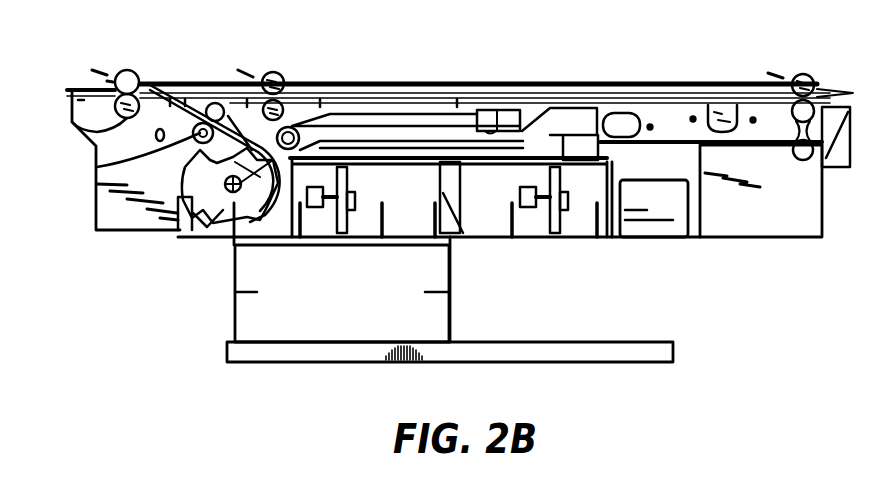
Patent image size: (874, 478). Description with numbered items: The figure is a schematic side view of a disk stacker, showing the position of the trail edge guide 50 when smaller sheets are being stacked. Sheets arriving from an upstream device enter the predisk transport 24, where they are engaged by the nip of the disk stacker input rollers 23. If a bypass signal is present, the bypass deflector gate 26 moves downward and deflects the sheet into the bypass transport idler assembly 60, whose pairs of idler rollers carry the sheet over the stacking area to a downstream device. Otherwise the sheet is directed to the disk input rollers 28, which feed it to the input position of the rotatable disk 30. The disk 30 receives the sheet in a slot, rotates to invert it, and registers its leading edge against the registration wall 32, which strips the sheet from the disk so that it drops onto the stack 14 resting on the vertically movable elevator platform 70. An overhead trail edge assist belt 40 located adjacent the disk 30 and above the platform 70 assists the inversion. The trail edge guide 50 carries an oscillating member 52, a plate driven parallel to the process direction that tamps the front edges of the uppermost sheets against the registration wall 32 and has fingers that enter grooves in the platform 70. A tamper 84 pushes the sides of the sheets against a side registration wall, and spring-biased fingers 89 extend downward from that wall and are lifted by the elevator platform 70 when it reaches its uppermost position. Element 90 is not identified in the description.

The stack 14 is at (350, 298).
The disk stacker input rollers 23 is at (72, 130).
The predisk transport 24 is at (176, 80).
The bypass deflector gate 26 is at (200, 82).
The disk input rollers 28 is at (97, 165).
The rotatable disk 30 is at (190, 236).
The registration wall 32 is at (232, 248).
The overhead trail edge assist belt 40 is at (392, 120).
The trail edge guide 50 is at (470, 230).
The oscillating member 52 is at (452, 278).
The bypass transport idler assembly 60 is at (498, 82).
The elevator platform 70 is at (614, 345).
The tamper 84 is at (560, 238).
The fingers 89 is at (515, 253).
The motor 90 is at (683, 244).